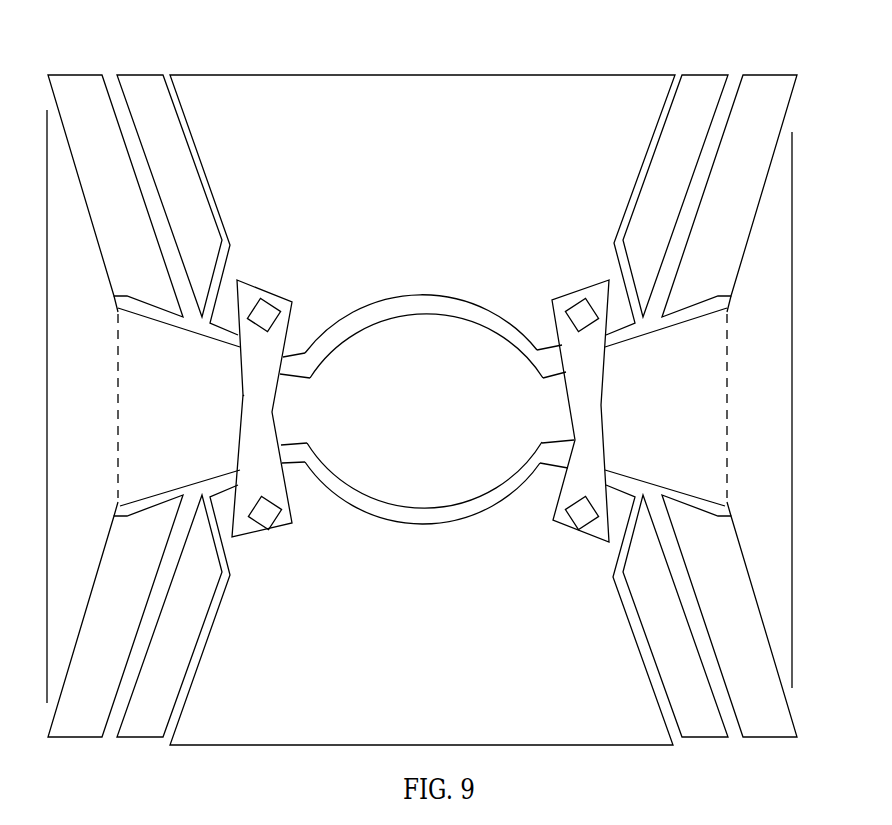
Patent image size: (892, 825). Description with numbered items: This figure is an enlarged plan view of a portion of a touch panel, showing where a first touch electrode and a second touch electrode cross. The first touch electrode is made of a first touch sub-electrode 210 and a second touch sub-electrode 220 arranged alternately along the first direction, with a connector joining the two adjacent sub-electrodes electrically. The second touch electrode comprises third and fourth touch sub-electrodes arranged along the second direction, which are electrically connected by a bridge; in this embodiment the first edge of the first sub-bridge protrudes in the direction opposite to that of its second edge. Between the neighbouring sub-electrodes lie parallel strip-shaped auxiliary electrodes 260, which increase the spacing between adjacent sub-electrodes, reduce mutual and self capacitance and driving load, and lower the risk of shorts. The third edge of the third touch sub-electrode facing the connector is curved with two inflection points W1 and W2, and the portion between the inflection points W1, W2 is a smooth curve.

The slots 260 is at (767, 97).
The first touch sub-electrode 210 is at (108, 432).
The second touch sub-electrode 220 is at (785, 432).
The inflection point W1 is at (303, 466).
The inflection point W2 is at (542, 466).